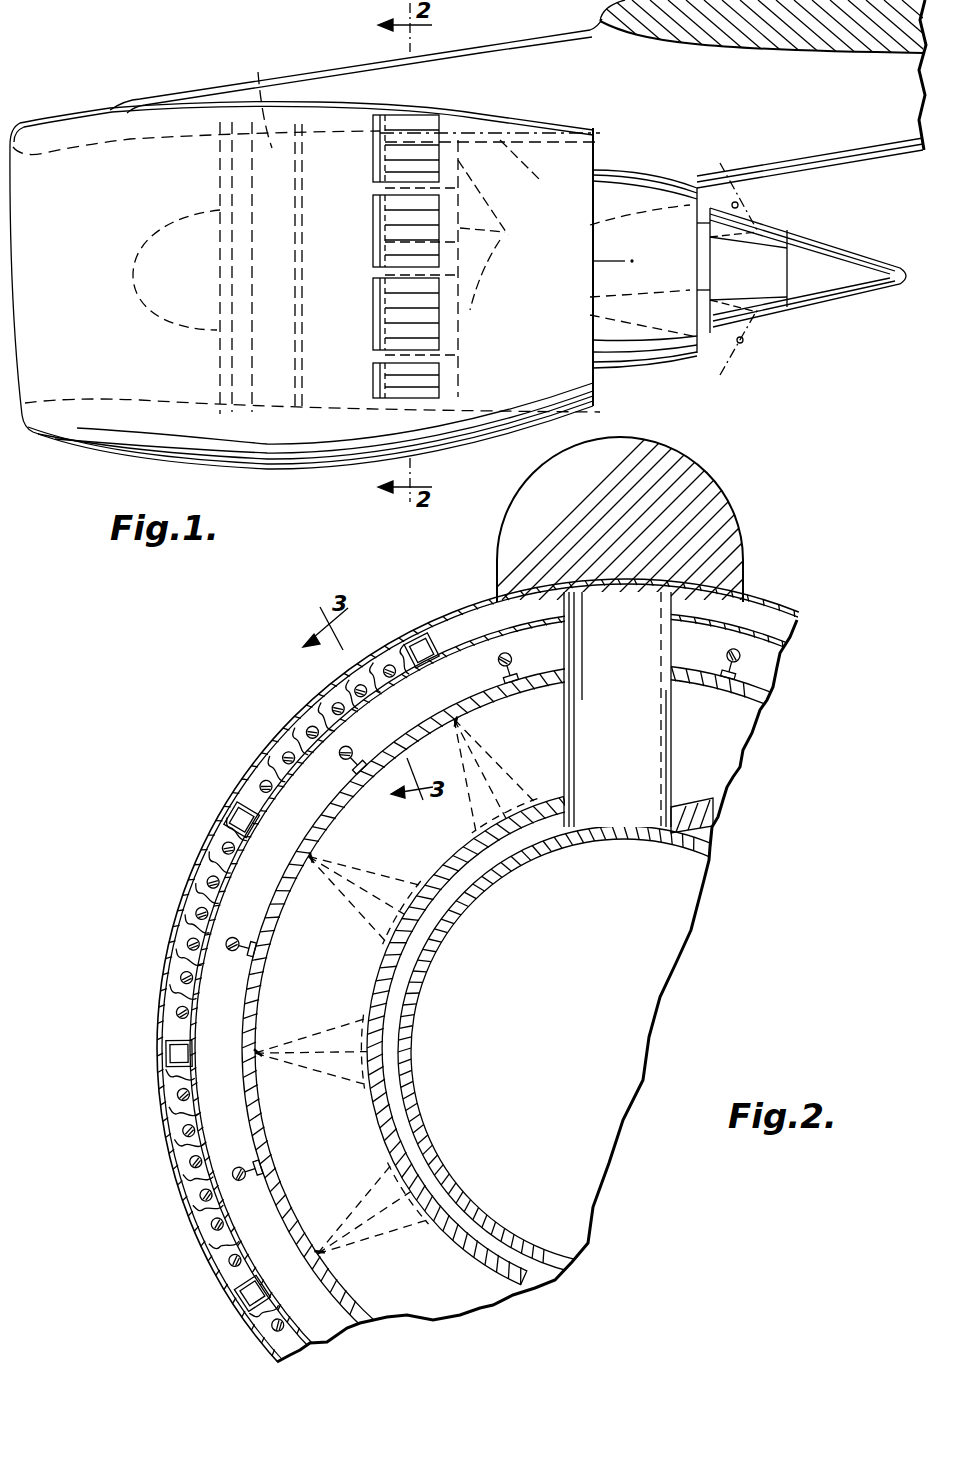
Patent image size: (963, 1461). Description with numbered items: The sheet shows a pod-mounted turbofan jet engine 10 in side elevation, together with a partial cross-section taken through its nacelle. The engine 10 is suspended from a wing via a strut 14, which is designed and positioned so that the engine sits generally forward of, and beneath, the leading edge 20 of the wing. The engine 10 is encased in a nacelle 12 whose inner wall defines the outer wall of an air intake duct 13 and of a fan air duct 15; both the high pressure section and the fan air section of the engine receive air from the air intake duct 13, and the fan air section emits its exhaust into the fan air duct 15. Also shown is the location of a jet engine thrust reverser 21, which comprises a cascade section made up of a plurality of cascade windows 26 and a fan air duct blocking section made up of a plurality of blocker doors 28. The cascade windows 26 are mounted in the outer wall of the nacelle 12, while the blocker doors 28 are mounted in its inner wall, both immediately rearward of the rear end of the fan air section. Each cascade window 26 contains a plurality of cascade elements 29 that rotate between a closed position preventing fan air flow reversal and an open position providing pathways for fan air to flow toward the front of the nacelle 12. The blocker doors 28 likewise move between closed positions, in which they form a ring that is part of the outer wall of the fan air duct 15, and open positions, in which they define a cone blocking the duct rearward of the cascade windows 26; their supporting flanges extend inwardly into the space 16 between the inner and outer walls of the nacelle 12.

In FIG. 1, the turbofan jet engine 10 is at (252, 98).
In FIG. 2, the turbofan jet engine 10 is at (582, 1015).
In FIG. 1, the nacelle 12 is at (93, 436).
In FIG. 2, the nacelle 12 is at (470, 603).
In FIG. 1, the air intake duct 13 is at (98, 211).
In FIG. 1, the strut 14 is at (486, 44).
In FIG. 2, the strut 14 is at (718, 548).
In FIG. 1, the fan air duct 15 is at (536, 165).
In FIG. 2, the space 16 is at (318, 811).
In FIG. 1, the leading edge 20 is at (598, 22).
In FIG. 1, the jet engine thrust reverser 21 is at (357, 419).
In FIG. 1, the cascade windows 26 is at (415, 140).
In FIG. 2, the cascade windows 26 is at (297, 695).
In FIG. 1, the blocker doors 28 is at (512, 236).
In FIG. 2, the blocker doors 28 is at (353, 795).
In FIG. 2, the cascade elements 29 is at (340, 660).